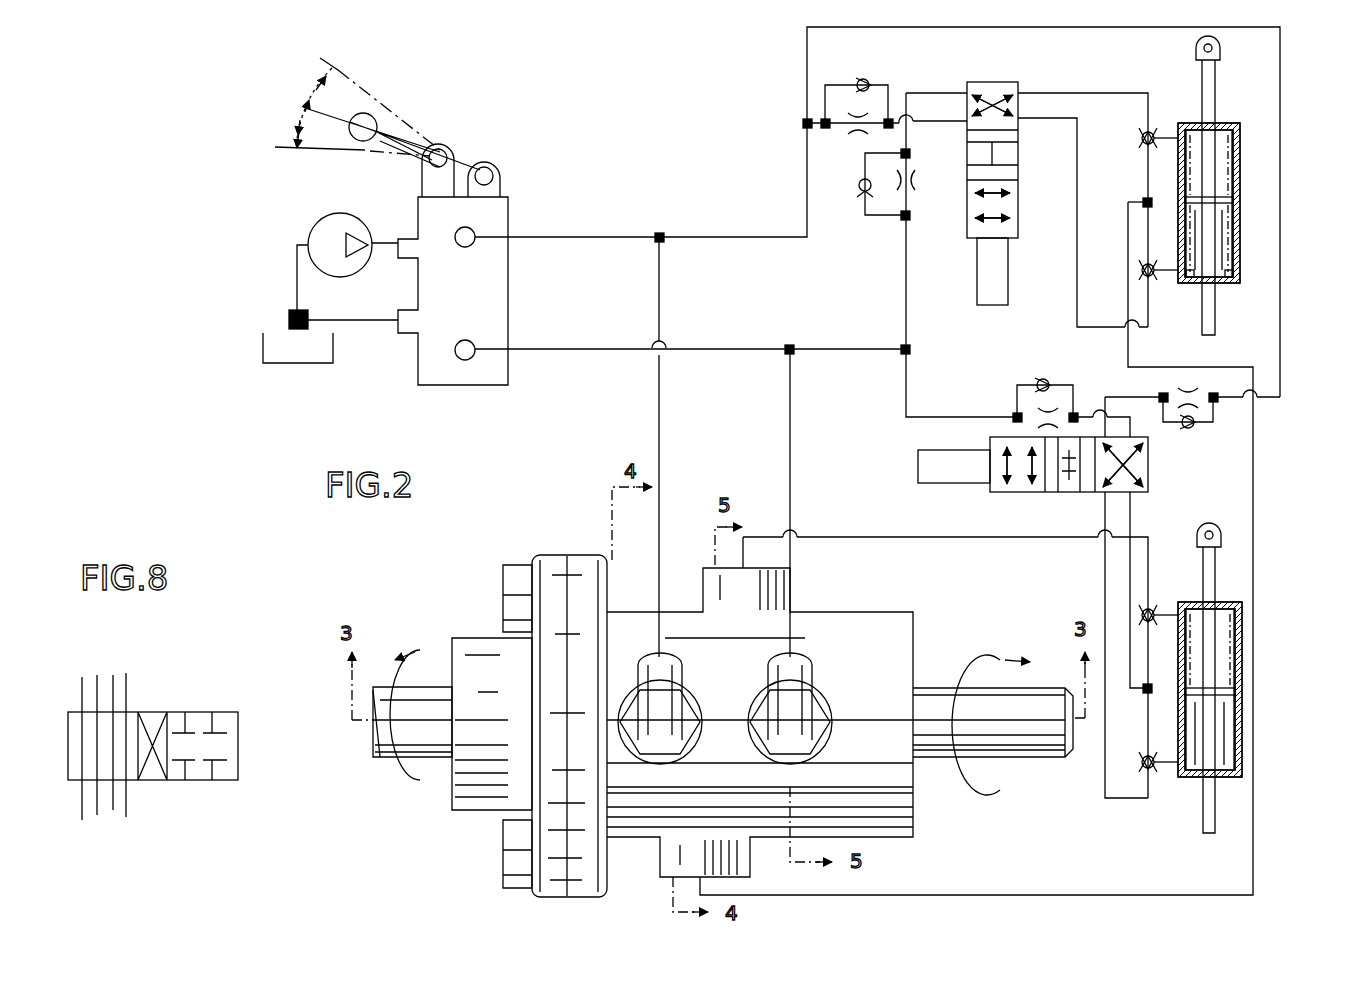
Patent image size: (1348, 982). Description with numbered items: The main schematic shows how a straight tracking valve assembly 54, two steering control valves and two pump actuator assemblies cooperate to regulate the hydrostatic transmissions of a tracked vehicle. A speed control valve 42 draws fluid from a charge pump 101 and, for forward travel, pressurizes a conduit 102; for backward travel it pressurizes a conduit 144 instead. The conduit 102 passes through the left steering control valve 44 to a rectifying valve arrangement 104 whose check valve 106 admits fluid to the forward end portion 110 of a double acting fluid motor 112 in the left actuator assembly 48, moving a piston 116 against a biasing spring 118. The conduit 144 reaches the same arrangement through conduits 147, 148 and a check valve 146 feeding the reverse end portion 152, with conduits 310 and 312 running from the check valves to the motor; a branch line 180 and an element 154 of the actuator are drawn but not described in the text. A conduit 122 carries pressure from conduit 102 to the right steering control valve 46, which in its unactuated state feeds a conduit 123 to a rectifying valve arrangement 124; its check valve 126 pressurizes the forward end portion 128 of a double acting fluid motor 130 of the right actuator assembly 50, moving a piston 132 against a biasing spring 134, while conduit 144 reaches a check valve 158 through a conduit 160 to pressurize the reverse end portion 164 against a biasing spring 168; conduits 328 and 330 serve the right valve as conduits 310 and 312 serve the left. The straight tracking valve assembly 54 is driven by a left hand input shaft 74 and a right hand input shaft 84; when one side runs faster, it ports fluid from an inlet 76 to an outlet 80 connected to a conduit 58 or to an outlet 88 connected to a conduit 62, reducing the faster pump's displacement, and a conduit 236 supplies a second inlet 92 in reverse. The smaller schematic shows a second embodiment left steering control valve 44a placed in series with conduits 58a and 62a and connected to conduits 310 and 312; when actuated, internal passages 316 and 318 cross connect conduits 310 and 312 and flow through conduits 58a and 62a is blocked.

In FIG. 2, the speed control valve 42 is at (485, 115).
In FIG. 2, the charge pump 101 is at (340, 212).
In FIG. 2, the conduit 102 is at (742, 238).
In FIG. 2, the conduit 180 is at (661, 290).
In FIG. 2, the conduit 144 is at (765, 347).
In FIG. 2, the conduit 147 is at (906, 313).
In FIG. 2, the conduit 148 is at (1062, 324).
In FIG. 2, the steering control valve 44 is at (998, 78).
In FIG. 2, the rectifying valve arrangement 104 is at (1145, 178).
In FIG. 2, the conduit 312 is at (1160, 258).
In FIG. 8, the conduit 312 is at (97, 670).
In FIG. 2, the check valve 106 is at (1140, 140).
In FIG. 2, the check valve 146 is at (1140, 270).
In FIG. 2, the conduit 310 is at (1168, 130).
In FIG. 8, the conduit 310 is at (82, 668).
In FIG. 2, the conduit 122 is at (1280, 340).
In FIG. 2, the pump actuator assembly 48 is at (1246, 185).
In FIG. 2, the cylinder chamber 154 is at (1243, 160).
In FIG. 2, the piston 116 is at (1228, 203).
In FIG. 2, the biasing spring 118 is at (1230, 225).
In FIG. 2, the double acting fluid motor 112 is at (1243, 250).
In FIG. 2, the forward end portion 110 is at (1228, 125).
In FIG. 2, the reverse end portion 152 is at (1200, 285).
In FIG. 2, the conduit 123 is at (1140, 508).
In FIG. 2, the steering control valve 46 is at (912, 470).
In FIG. 2, the conduit 160 is at (1103, 550).
In FIG. 2, the rectifying valve arrangement 124 is at (1140, 640).
In FIG. 2, the check valve 126 is at (1145, 620).
In FIG. 2, the conduit 62 is at (940, 537).
In FIG. 2, the conduit 236 is at (795, 552).
In FIG. 2, the conduit 328 is at (1170, 608).
In FIG. 2, the check valve 158 is at (1140, 762).
In FIG. 2, the conduit 330 is at (1162, 770).
In FIG. 2, the reverse end portion 164 is at (1178, 700).
In FIG. 2, the pump actuator assembly 50 is at (1256, 685).
In FIG. 2, the forward end portion 128 is at (1243, 608).
In FIG. 2, the biasing spring 168 is at (1235, 648).
In FIG. 2, the piston 132 is at (1235, 695).
In FIG. 2, the biasing spring 134 is at (1230, 755).
In FIG. 2, the double acting fluid motor 130 is at (1235, 600).
In FIG. 2, the straight tracking valve assembly 54 is at (682, 697).
In FIG. 2, the outlet 88 is at (700, 572).
In FIG. 2, the outlet 80 is at (750, 874).
In FIG. 2, the inlet 76 is at (690, 705).
In FIG. 2, the inlet 92 is at (828, 705).
In FIG. 2, the left hand input shaft 74 is at (372, 738).
In FIG. 2, the right hand input shaft 84 is at (940, 690).
In FIG. 2, the conduit 58 is at (1062, 900).
In FIG. 8, the left steering control valve 44a is at (184, 709).
In FIG. 8, the internal passage 318 is at (152, 712).
In FIG. 8, the internal passage 316 is at (155, 778).
In FIG. 8, the conduit 58a is at (113, 675).
In FIG. 8, the conduit 62a is at (128, 688).